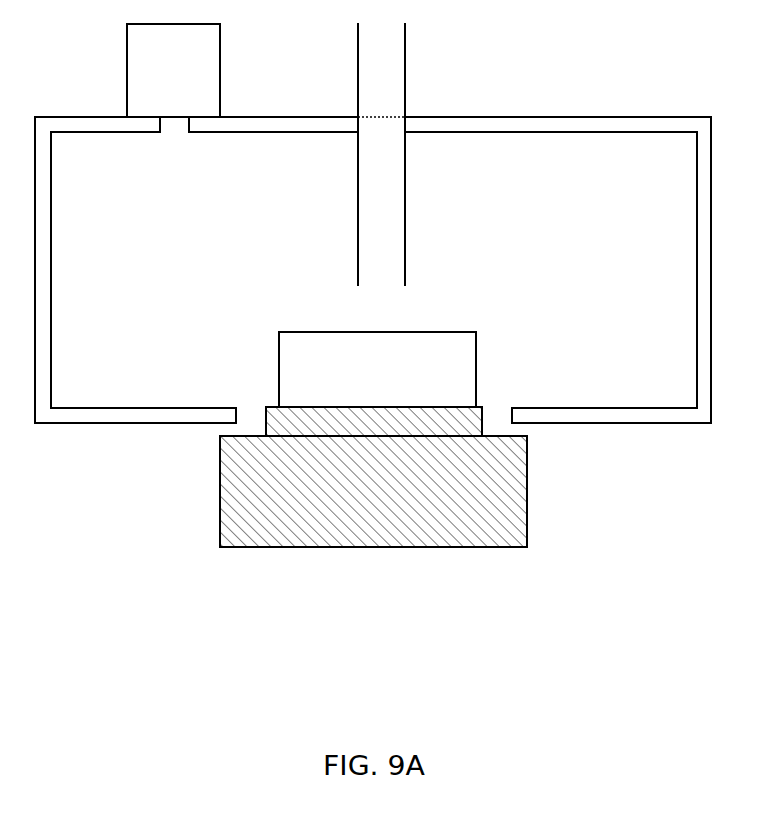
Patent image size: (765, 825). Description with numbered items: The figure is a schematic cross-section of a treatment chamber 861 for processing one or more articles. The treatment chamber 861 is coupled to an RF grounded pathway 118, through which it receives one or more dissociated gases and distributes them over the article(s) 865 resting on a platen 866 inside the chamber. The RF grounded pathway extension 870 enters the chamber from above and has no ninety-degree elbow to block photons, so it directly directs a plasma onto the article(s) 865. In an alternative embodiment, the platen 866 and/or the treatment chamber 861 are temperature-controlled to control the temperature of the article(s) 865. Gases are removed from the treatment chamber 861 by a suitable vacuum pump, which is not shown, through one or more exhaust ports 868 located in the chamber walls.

The RF grounded pathway 118 is at (381, 91).
The treatment chamber 861 is at (373, 270).
The article(s) 865 is at (377, 369).
The platen 866 is at (220, 492).
The exhaust port 868 is at (497, 417).
The RF grounded pathway extension 870 is at (405, 228).